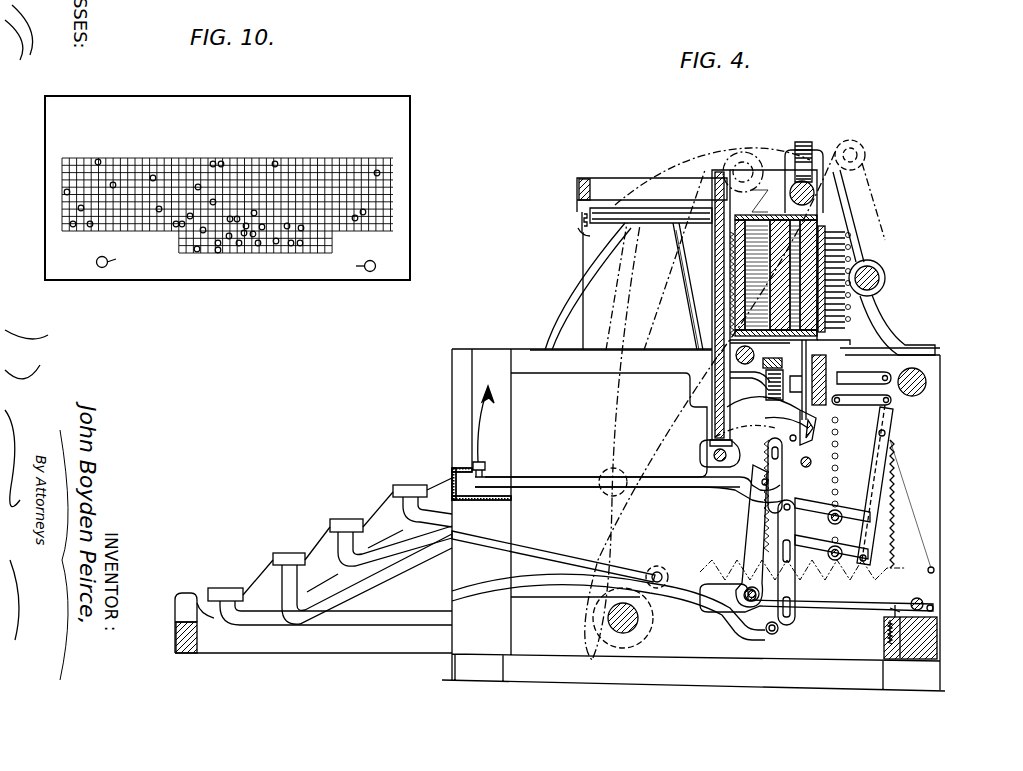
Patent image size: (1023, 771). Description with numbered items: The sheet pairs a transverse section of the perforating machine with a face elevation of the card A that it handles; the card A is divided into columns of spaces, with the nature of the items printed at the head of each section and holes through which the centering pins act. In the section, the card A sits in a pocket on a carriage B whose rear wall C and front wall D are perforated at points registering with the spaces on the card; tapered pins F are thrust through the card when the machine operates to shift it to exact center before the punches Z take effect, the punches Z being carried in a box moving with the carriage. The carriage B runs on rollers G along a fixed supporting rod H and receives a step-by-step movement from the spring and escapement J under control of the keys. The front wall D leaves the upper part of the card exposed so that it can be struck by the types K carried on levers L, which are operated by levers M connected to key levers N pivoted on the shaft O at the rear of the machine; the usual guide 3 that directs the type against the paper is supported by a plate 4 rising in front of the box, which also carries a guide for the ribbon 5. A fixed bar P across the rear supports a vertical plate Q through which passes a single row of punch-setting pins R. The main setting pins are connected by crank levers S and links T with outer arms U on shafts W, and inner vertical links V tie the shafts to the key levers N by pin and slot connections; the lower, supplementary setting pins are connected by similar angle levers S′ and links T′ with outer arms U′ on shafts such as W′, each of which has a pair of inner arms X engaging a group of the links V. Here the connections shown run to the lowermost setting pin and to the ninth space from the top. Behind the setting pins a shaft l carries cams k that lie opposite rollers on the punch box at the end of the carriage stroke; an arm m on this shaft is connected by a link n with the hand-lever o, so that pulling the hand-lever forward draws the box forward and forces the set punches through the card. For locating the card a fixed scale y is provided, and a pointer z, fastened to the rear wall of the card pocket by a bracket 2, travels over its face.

In FIG. 10, the card A is at (410, 160).
In FIG. 4, the card A is at (728, 200).
In FIG. 4, the bracket 2 is at (652, 195).
In FIG. 4, the guide 3 is at (690, 240).
In FIG. 4, the plate 4 is at (699, 290).
In FIG. 4, the ribbon 5 is at (622, 223).
In FIG. 4, the pointer z is at (583, 216).
In FIG. 4, the fixed scale y is at (583, 236).
In FIG. 4, the punches Z is at (761, 201).
In FIG. 4, the front wall D is at (728, 248).
In FIG. 4, the carriage B is at (770, 200).
In FIG. 4, the rear wall C is at (740, 160).
In FIG. 4, the fixed supporting rod H is at (788, 190).
In FIG. 4, the rollers G is at (818, 175).
In FIG. 4, the arm m is at (868, 170).
In FIG. 4, the punch-setting pins R is at (852, 218).
In FIG. 4, the shaft l is at (870, 265).
In FIG. 4, the cam k is at (887, 282).
In FIG. 4, the vertical plate Q is at (860, 340).
In FIG. 4, the tapered pins F is at (742, 338).
In FIG. 4, the fixed bar P is at (828, 365).
In FIG. 4, the crank levers S is at (870, 372).
In FIG. 4, the links T is at (890, 398).
In FIG. 4, the angle levers S′ is at (880, 430).
In FIG. 4, the links T′ is at (860, 535).
In FIG. 4, the outer arms U′ is at (870, 556).
In FIG. 4, the inner vertical links V is at (790, 518).
In FIG. 4, the shafts W is at (845, 465).
In FIG. 4, the outer arms U is at (838, 508).
In FIG. 4, the supplementary shaft W′ is at (845, 520).
In FIG. 4, the spring and escapement J is at (775, 430).
In FIG. 4, the levers L is at (650, 497).
In FIG. 4, the levers M is at (750, 522).
In FIG. 4, the link n is at (690, 418).
In FIG. 4, the hand-lever o is at (600, 410).
In FIG. 4, the types K is at (485, 462).
In FIG. 4, the key levers N is at (522, 545).
In FIG. 4, the inner arms X is at (790, 628).
In FIG. 4, the shaft O is at (905, 603).